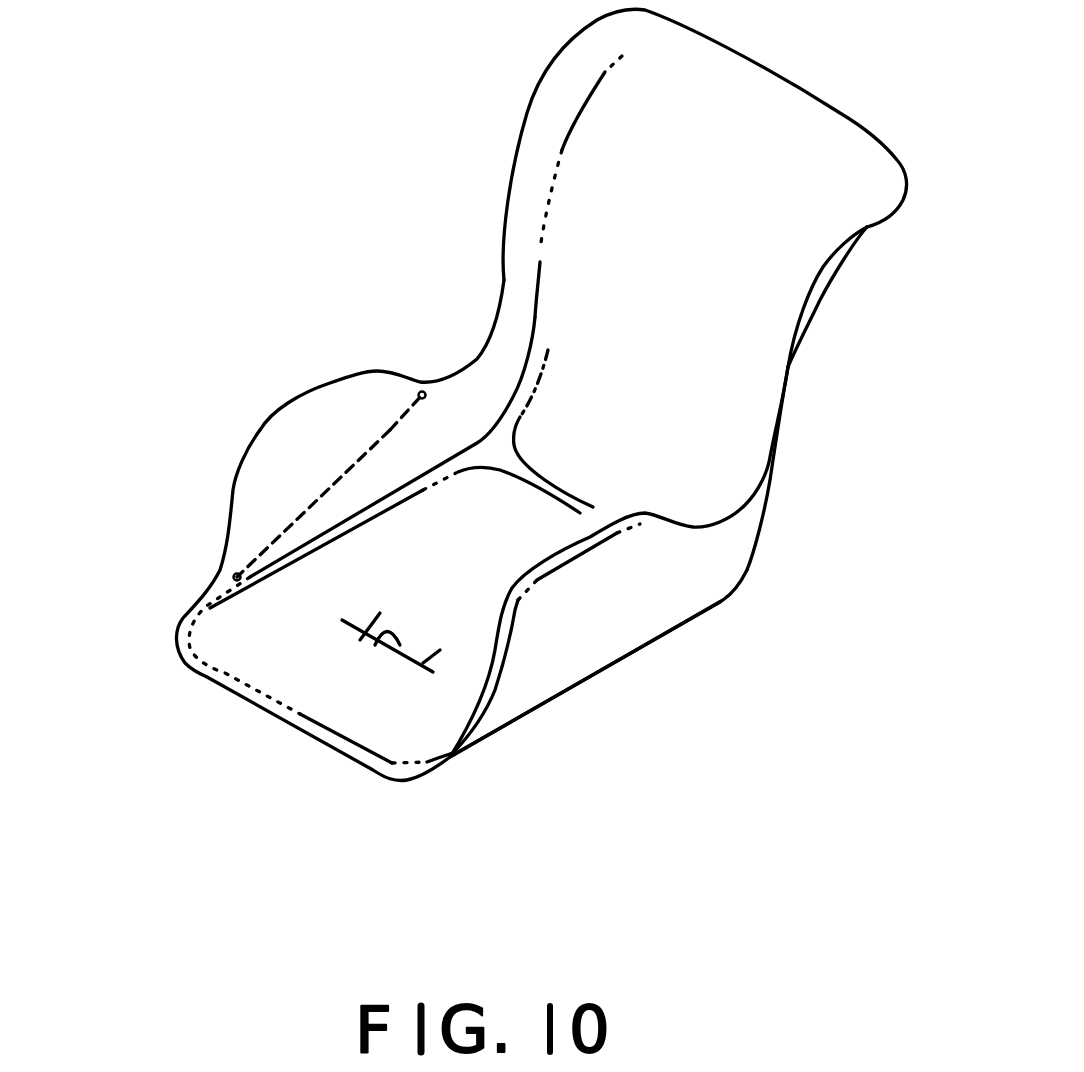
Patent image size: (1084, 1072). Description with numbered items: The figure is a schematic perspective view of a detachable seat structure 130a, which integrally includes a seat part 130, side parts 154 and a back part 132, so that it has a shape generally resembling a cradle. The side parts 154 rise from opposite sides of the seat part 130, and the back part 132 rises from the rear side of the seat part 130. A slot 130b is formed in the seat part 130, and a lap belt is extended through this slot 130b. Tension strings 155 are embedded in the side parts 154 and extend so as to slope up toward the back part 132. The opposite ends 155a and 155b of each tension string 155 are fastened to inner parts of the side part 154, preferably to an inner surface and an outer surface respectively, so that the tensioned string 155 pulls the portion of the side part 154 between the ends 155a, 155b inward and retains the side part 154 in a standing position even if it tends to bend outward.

The seat part 130 is at (370, 710).
The detachable seat structure 130a is at (620, 705).
The slot 130b is at (360, 647).
The back part 132 is at (717, 323).
The side parts 154 is at (260, 442).
The tension strings 155 is at (390, 430).
The end of tension string 155a is at (233, 575).
The end of tension string 155b is at (424, 392).